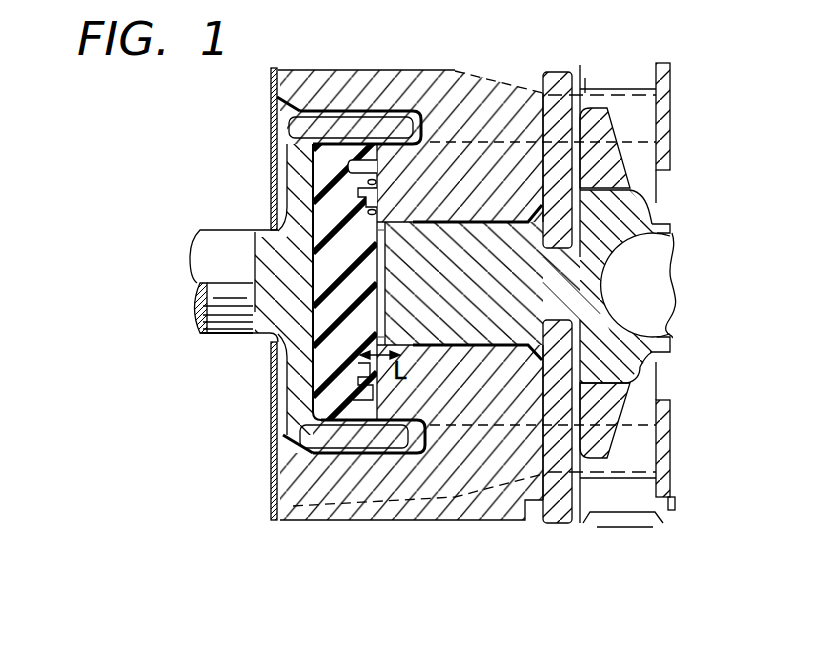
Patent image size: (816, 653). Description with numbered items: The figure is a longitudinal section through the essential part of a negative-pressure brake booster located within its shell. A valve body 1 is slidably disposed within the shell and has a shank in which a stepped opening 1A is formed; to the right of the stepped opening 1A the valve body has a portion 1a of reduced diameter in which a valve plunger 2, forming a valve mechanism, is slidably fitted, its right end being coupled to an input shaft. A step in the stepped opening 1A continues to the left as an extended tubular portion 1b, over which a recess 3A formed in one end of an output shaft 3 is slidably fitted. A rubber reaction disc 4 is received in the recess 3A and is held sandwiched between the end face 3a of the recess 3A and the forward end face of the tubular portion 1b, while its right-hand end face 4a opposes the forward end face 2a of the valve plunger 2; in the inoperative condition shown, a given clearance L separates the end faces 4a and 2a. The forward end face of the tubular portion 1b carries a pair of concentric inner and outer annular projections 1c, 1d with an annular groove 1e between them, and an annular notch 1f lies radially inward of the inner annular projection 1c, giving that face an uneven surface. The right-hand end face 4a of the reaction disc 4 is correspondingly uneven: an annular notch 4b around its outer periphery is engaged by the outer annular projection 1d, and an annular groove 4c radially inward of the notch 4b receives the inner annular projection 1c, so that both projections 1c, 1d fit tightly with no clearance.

The valve body 1 is at (404, 481).
The stepped opening 1A is at (292, 452).
The portion of reduced diameter 1a is at (490, 318).
The extended tubular portion 1b is at (386, 400).
The inner annular projection 1c is at (355, 205).
The outer annular projection 1d is at (372, 111).
The annular groove 1e is at (378, 163).
The annular notch 1f is at (422, 182).
The valve plunger 2 is at (445, 317).
The forward end face of the valve plunger 2a is at (345, 320).
The output shaft 3 is at (188, 242).
The recess 3A is at (323, 111).
The end face of the recess 3a is at (313, 177).
The reaction disc 4 is at (313, 355).
The right-hand end face of the reaction disc 4a is at (472, 220).
The annular notch 4b is at (350, 158).
The annular groove 4c is at (285, 165).